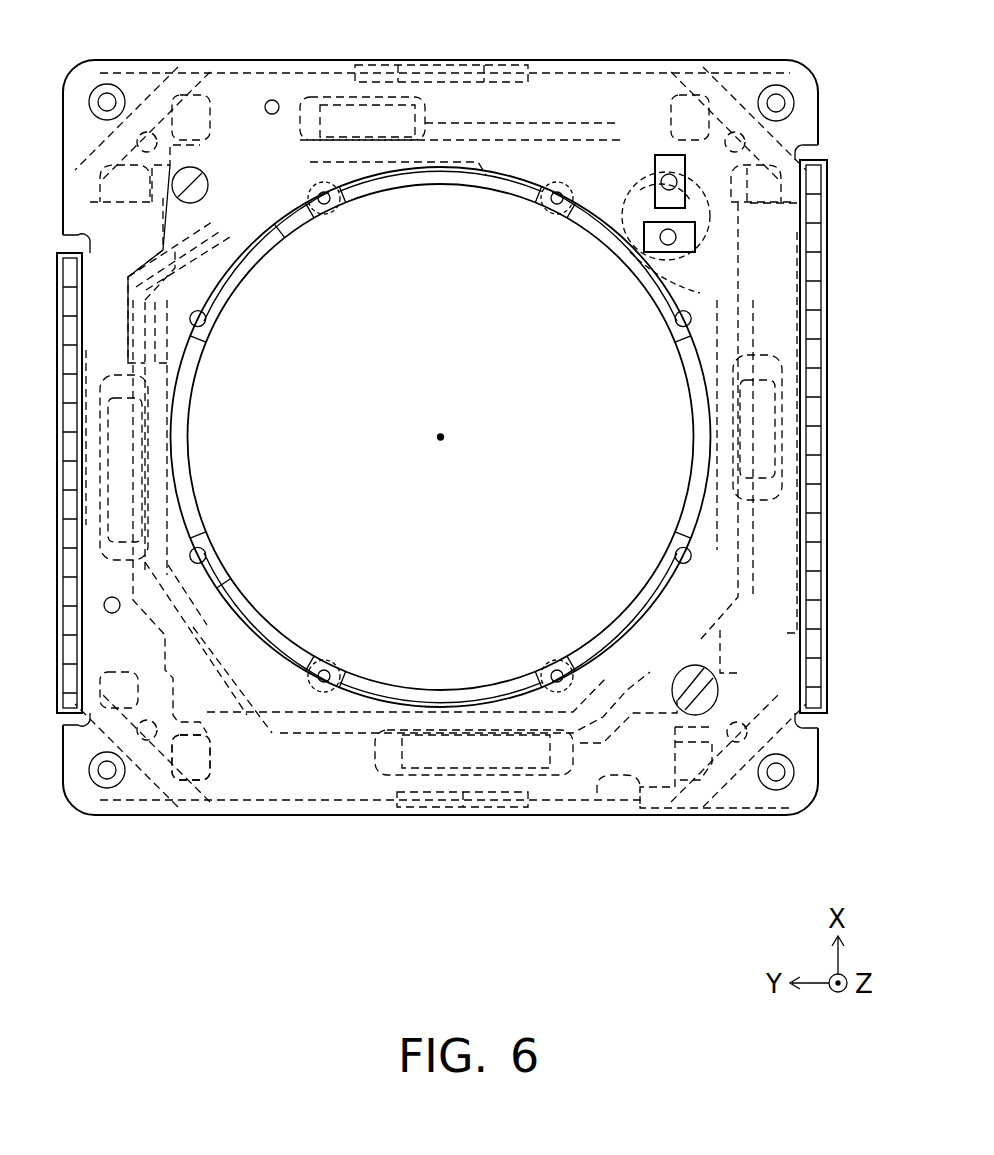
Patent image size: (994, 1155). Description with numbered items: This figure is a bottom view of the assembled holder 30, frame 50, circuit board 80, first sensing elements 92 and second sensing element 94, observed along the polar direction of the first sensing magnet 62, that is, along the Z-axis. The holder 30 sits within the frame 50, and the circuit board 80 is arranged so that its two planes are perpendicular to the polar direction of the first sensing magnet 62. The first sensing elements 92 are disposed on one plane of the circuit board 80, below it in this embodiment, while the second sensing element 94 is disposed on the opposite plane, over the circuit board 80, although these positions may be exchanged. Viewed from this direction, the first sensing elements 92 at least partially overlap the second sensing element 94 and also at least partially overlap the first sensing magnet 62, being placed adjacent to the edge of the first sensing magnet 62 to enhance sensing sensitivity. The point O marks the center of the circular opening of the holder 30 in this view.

The holder 30 is at (585, 175).
The frame 50 is at (538, 95).
The first sensing magnet 62 is at (672, 257).
The circuit board 80 is at (812, 772).
The first sensing elements 92 is at (686, 192).
The second sensing element 94 is at (710, 206).
The optical center O is at (446, 436).